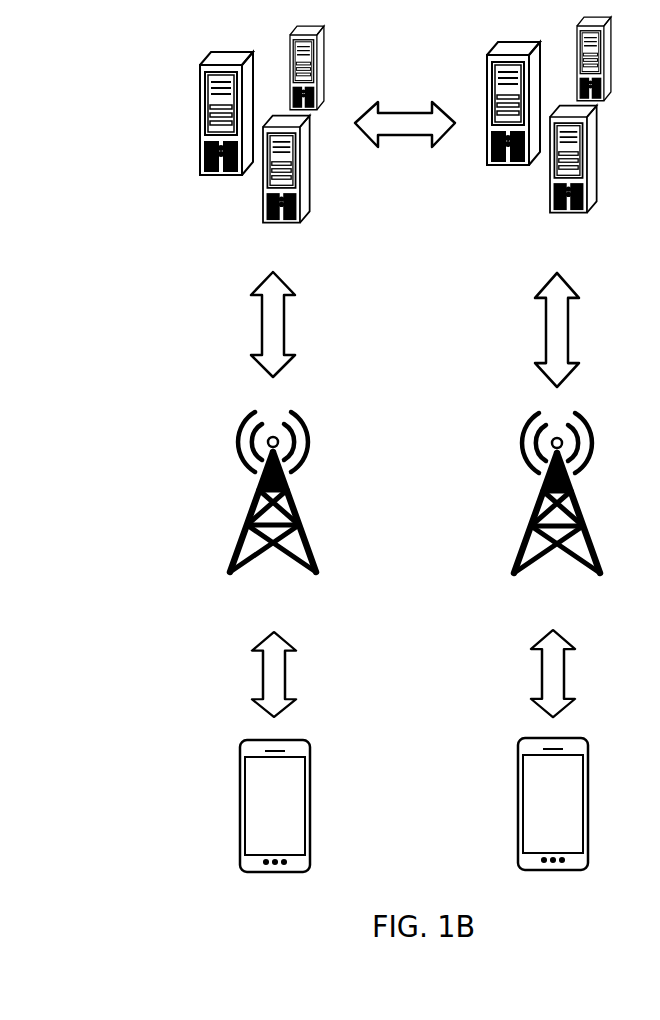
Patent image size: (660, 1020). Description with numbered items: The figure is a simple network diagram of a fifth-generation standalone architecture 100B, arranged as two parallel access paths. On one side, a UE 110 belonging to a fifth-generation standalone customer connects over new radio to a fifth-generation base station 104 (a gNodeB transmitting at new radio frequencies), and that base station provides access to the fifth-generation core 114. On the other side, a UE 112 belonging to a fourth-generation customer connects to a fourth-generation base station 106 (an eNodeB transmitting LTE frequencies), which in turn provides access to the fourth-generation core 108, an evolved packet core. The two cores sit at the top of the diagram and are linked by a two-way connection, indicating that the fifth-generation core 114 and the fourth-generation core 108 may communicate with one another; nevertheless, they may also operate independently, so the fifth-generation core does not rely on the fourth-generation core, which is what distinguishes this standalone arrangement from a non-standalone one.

The 5G SA architecture 100B is at (105, 196).
The 5G core 114 is at (200, 160).
The 4G core 108 is at (487, 75).
The 5G base station 104 is at (233, 553).
The 4G base station 106 is at (516, 553).
The user equipment 110 is at (240, 836).
The user equipment 112 is at (518, 836).